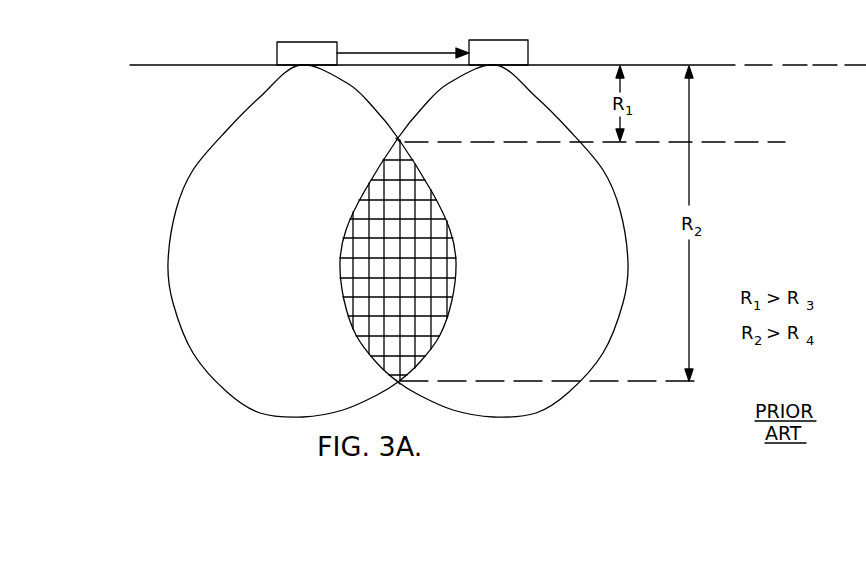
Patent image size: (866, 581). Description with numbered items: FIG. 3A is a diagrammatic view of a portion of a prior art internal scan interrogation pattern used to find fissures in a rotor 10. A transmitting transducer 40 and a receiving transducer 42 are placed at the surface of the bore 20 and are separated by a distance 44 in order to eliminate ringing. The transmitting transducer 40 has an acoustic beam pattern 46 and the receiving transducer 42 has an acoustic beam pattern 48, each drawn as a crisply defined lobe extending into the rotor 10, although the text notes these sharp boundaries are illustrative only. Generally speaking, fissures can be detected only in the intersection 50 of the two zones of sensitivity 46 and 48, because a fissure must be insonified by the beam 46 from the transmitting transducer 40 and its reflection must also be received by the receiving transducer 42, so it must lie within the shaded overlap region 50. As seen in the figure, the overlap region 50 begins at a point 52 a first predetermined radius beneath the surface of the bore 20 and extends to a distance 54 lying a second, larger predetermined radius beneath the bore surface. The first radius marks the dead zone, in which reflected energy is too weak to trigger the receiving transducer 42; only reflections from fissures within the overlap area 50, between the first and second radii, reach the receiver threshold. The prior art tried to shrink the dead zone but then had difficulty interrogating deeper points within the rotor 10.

The rotor 10 is at (766, 121).
The bore 20 is at (696, 63).
The transmitting transducer 40 is at (528, 47).
The receiving transducer 42 is at (277, 47).
The distance 44 is at (397, 53).
The acoustic beam pattern 46 is at (528, 219).
The acoustic beam pattern 48 is at (293, 220).
The overlap region 50 is at (376, 305).
The point 52 is at (398, 139).
The distance 54 is at (398, 383).